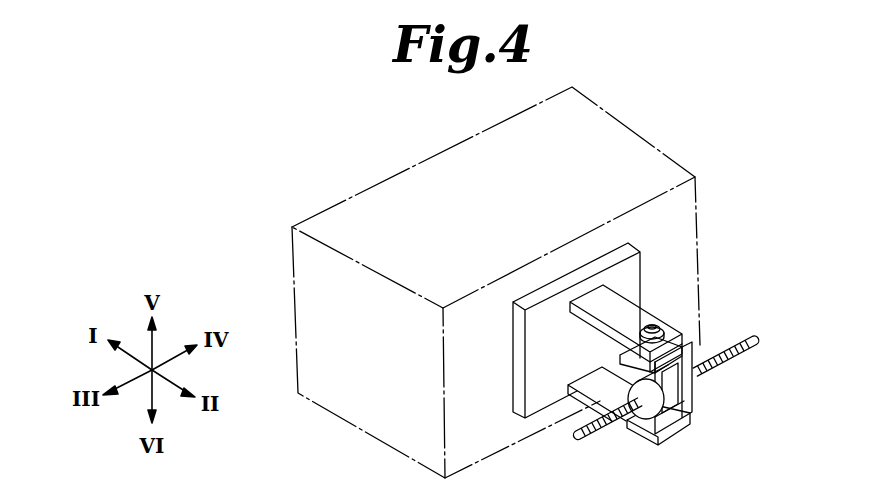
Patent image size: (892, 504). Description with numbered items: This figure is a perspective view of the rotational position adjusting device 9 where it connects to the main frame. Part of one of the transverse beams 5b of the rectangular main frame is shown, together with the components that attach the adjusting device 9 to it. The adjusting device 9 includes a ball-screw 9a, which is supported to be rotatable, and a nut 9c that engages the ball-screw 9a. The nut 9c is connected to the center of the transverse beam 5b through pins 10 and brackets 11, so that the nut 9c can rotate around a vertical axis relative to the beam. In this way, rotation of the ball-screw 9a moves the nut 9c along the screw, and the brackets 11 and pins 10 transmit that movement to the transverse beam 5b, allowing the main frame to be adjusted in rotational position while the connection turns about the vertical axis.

The transverse beam 5b is at (620, 150).
The bracket 11 is at (615, 310).
The pin 10 is at (657, 322).
The rotational position adjusting device 9 is at (710, 400).
The ball-screw 9a is at (732, 360).
The nut 9c is at (663, 393).